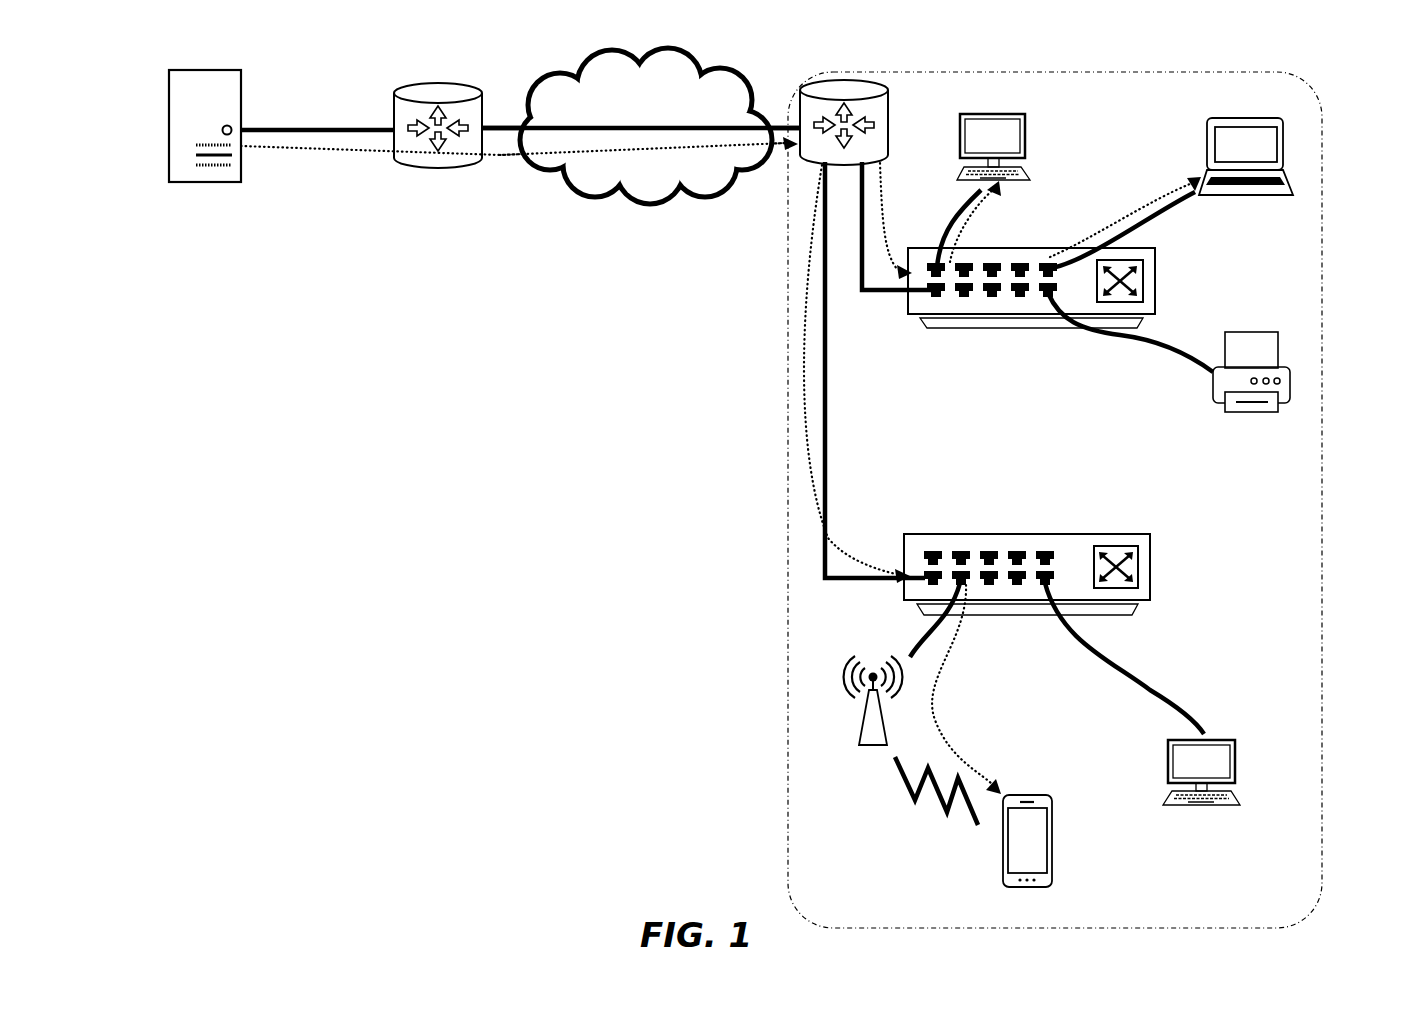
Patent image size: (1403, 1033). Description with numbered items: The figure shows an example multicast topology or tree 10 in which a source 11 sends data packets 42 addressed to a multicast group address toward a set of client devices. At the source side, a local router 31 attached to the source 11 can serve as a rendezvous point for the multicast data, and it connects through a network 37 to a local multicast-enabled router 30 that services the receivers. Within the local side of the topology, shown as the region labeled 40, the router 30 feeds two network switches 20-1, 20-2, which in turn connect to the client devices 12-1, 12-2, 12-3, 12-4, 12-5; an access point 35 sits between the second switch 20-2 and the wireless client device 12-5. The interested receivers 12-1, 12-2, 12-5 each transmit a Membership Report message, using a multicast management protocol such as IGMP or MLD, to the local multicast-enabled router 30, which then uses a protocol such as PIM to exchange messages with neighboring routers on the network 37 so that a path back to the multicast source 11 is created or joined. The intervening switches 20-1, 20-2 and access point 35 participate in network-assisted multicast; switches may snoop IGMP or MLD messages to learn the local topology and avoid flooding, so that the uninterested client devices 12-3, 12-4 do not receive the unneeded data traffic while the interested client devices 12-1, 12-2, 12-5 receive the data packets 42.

The multicast topology 10 is at (1290, 51).
The source 11 is at (193, 219).
The client device 12-1 is at (993, 131).
The client device 12-2 is at (1246, 139).
The client device 12-3 is at (1251, 356).
The client device 12-4 is at (1201, 795).
The client device 12-5 is at (1027, 855).
The network switch 20-1 is at (1031, 305).
The network switch 20-2 is at (1027, 591).
The local multicast-enabled router 30 is at (844, 136).
The local router 31 is at (438, 106).
The access point 35 is at (909, 740).
The network 37 is at (641, 148).
The local network 40 is at (1322, 165).
The data packets 42 is at (515, 157).